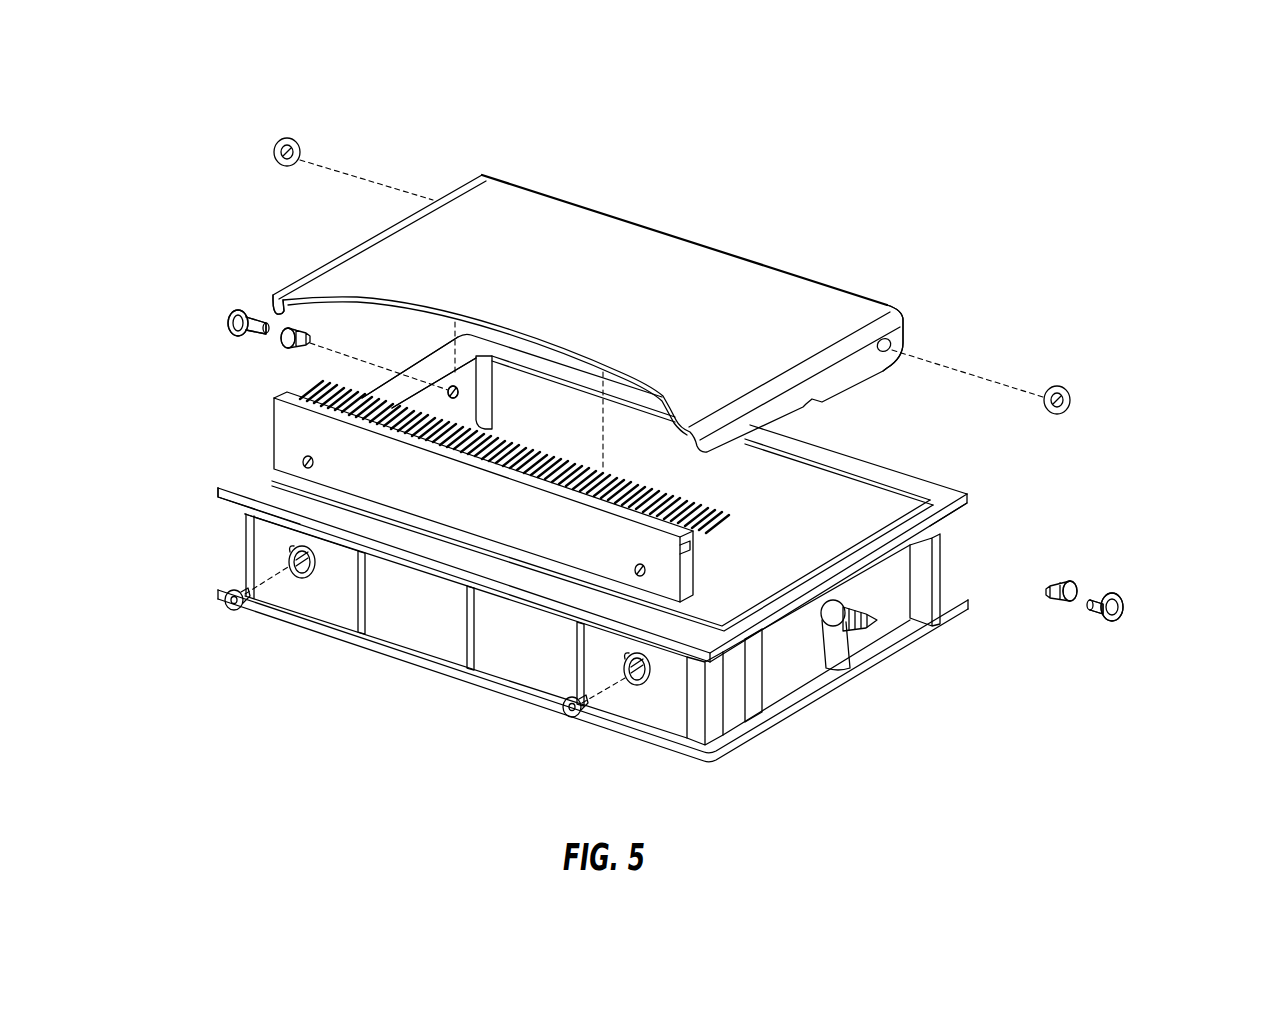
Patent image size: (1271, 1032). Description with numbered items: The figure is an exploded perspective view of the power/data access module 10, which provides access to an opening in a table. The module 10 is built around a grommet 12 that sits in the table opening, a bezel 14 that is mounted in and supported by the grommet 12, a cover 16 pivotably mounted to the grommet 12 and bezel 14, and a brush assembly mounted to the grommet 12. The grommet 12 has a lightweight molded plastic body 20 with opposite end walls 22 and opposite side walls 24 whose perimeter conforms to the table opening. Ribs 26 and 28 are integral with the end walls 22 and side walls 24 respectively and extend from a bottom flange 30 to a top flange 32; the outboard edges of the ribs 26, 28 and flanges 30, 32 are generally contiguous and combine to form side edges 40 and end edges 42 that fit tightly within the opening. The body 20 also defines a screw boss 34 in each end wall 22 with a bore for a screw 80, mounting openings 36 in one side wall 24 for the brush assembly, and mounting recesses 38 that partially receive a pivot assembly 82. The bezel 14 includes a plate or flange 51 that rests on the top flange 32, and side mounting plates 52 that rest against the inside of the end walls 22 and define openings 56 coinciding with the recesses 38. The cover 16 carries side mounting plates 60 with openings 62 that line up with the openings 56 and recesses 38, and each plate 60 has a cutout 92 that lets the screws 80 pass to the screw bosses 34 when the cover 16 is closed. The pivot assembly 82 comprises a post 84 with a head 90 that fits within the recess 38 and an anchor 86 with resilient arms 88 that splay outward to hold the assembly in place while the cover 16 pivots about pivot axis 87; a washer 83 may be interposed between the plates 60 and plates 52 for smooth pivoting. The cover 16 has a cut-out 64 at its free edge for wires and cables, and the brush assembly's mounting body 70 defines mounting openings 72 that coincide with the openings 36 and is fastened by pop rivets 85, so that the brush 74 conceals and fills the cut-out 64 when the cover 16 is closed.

The access module 10 is at (707, 171).
The grommet 12 is at (912, 645).
The bezel 14 is at (912, 480).
The cover 16 is at (791, 265).
The body 20 is at (520, 706).
The end walls 22 is at (805, 663).
The side walls 24 is at (437, 645).
The ribs 26 is at (760, 700).
The ribs 28 is at (365, 634).
The bottom flange 30 is at (655, 732).
The top flange 32 is at (224, 497).
The screw boss 34 is at (848, 662).
The mounting openings 36 is at (305, 579).
The mounting recesses 38 is at (462, 393).
The side edges 40 is at (960, 570).
The end edges 42 is at (355, 555).
The flange 51 is at (822, 455).
The side mounting plates 52 is at (433, 403).
The openings 56 is at (511, 406).
The side mounting plates 60 is at (276, 297).
The openings 62 is at (893, 343).
The cut-out 64 is at (580, 350).
The mounting body 70 is at (672, 566).
The mounting openings 72 is at (645, 580).
The brush 74 is at (732, 517).
The screw 80 is at (860, 609).
The pivot assembly 82 is at (207, 323).
The washer 83 is at (1077, 390).
The post 84 is at (228, 336).
The pop rivets 85 is at (229, 612).
The anchor 86 is at (256, 366).
The pivot axis 87 is at (385, 184).
The resilient arms 88 is at (290, 350).
The head 90 is at (236, 310).
The cutout 92 is at (805, 400).